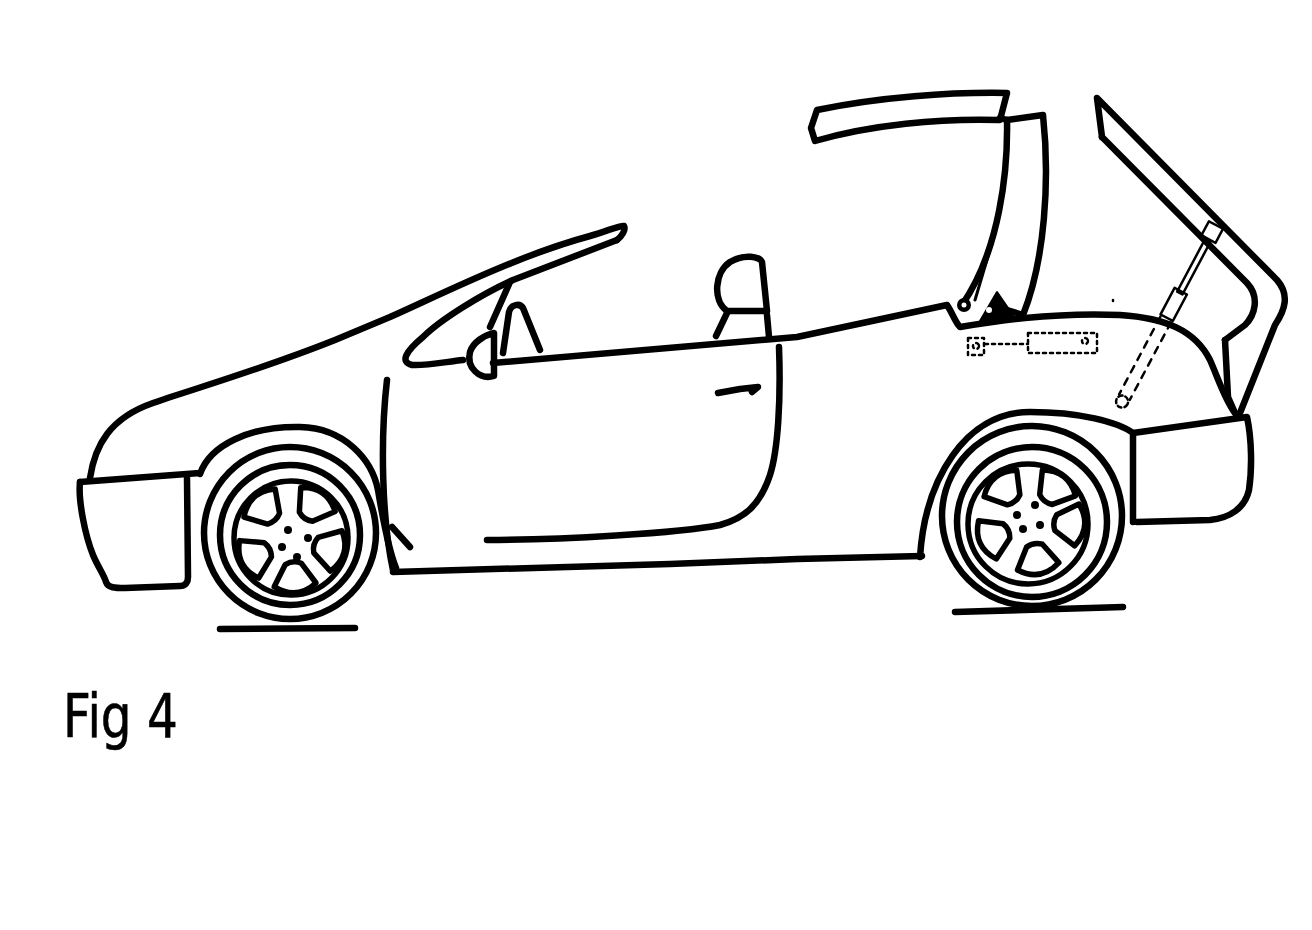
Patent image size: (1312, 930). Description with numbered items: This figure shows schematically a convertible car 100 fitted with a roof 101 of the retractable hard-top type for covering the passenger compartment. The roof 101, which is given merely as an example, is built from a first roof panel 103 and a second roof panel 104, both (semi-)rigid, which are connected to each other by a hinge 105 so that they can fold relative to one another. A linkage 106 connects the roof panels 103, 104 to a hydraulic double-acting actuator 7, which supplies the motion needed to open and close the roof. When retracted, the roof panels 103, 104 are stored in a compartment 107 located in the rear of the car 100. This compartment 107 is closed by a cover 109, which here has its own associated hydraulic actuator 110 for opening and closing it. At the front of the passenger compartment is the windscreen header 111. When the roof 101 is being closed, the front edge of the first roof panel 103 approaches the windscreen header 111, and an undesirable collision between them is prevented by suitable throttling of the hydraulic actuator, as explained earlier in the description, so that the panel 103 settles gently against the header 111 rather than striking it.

The convertible car 100 is at (299, 262).
The roof 101 is at (1054, 72).
The first roof panel 103 is at (910, 110).
The second roof panel 104 is at (1027, 218).
The hinge 105 is at (1003, 119).
The linkage 106 is at (973, 280).
The compartment 107 is at (1114, 288).
The cover 109 is at (1173, 183).
The hydraulic actuator 110 is at (1177, 305).
The windscreen header 111 is at (602, 223).
The hydraulic double-acting actuator 7 is at (1057, 346).